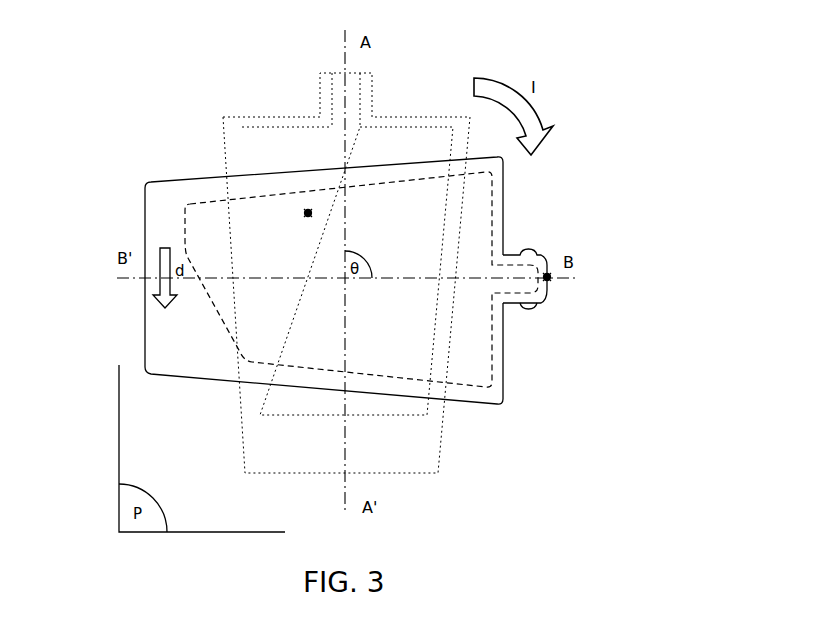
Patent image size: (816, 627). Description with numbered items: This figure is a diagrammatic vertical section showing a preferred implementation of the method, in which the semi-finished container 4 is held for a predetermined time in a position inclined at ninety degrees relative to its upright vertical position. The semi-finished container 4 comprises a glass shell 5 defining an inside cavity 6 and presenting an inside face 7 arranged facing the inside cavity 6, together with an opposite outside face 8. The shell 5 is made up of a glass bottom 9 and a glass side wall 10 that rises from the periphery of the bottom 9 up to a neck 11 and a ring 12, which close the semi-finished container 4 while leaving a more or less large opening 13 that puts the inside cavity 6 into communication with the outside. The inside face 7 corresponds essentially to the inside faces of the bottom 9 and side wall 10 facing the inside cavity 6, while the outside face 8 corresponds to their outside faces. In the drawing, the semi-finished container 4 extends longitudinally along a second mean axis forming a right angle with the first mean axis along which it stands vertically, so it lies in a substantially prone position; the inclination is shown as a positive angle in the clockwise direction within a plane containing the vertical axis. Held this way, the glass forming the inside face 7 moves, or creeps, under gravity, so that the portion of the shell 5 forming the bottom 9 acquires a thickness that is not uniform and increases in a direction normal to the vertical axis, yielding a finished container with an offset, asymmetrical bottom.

The semi-finished container 4 is at (160, 84).
The glass shell 5 is at (345, 292).
The inside cavity 6 is at (308, 209).
The inside face 7 is at (265, 191).
The outside face 8 is at (145, 299).
The glass bottom 9 is at (158, 213).
The glass side wall 10 is at (230, 188).
The neck 11 is at (512, 304).
The ring 12 is at (530, 310).
The opening 13 is at (547, 270).